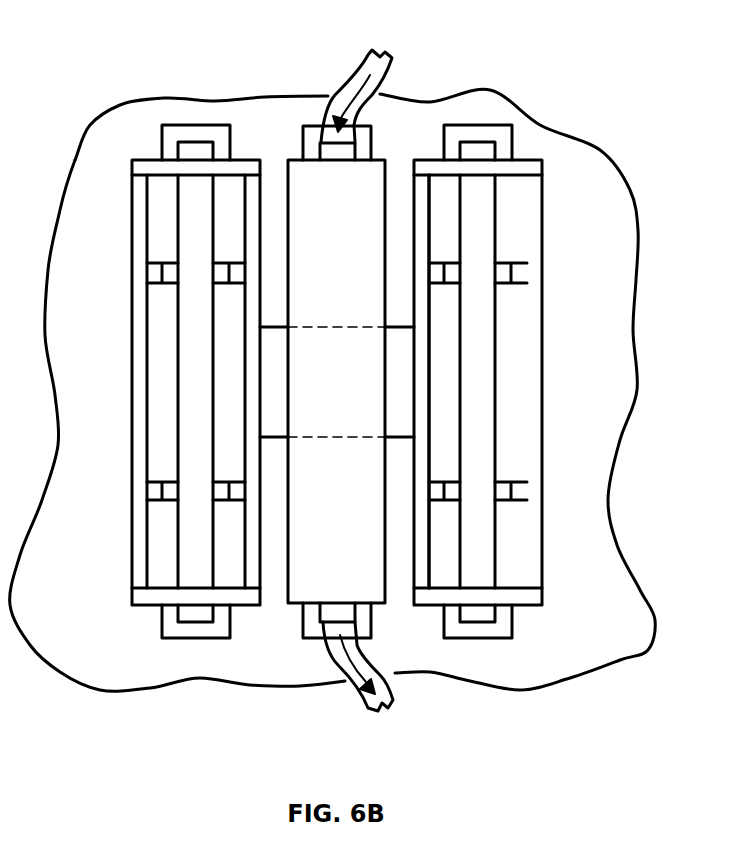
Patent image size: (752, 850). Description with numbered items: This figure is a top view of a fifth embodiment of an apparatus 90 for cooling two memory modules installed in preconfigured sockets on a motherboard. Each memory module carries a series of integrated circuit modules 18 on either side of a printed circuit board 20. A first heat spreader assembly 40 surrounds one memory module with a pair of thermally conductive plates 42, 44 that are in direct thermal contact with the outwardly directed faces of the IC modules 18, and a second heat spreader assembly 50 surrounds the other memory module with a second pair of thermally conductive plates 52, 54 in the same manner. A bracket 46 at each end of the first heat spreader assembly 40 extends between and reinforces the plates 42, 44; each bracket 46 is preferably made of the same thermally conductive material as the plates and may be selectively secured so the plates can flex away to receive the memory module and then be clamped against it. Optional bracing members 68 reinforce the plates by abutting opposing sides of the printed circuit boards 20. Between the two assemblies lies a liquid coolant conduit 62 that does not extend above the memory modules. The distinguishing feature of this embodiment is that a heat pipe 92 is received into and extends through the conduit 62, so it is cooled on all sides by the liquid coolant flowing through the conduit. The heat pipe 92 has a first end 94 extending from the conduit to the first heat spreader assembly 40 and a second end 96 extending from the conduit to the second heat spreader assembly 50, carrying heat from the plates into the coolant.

The integrated circuit modules 18 is at (155, 533).
The printed circuit board 20 is at (196, 150).
The first heat spreader assembly 40 is at (118, 162).
The thermally conductive plate 42 is at (130, 363).
The thermally conductive plate 44 is at (263, 186).
The bracket 46 is at (148, 158).
The second heat spreader assembly 50 is at (563, 242).
The thermally conductive plate 52 is at (543, 373).
The thermally conductive plate 54 is at (411, 195).
The liquid coolant conduit 62 is at (336, 382).
The bracing members 68 is at (337, 381).
The apparatus for cooling the memory modules 90 is at (497, 89).
The heat pipe 92 is at (276, 327).
The first end of the heat pipe 94 is at (274, 357).
The second end of the heat pipe 96 is at (403, 407).